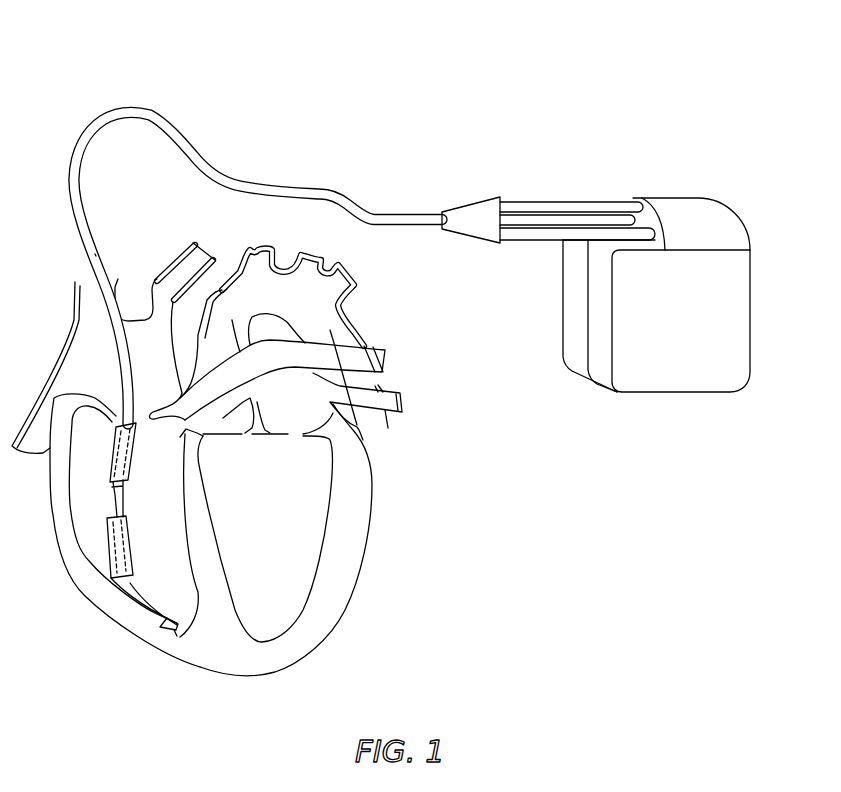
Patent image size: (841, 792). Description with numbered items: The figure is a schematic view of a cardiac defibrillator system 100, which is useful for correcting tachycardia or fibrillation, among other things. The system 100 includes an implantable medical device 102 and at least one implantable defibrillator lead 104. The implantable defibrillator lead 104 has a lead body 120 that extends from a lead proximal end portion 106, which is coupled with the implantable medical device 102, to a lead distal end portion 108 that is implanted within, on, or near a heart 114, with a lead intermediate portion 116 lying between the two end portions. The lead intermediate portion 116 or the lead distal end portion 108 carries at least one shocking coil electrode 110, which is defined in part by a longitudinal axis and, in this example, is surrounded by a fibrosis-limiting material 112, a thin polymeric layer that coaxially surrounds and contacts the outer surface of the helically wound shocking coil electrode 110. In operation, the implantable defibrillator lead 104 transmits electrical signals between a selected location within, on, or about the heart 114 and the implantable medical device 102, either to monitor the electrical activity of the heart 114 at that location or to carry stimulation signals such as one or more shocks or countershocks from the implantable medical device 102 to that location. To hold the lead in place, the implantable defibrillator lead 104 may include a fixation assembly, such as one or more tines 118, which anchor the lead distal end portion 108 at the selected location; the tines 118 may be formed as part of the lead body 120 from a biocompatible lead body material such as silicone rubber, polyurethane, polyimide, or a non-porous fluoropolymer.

The cardiac defibrillator system 100 is at (698, 66).
The implantable medical device 102 is at (750, 308).
The implantable defibrillator lead 104 is at (89, 117).
The lead proximal end portion 106 is at (570, 200).
The lead distal end portion 108 is at (140, 603).
The shocking coil electrode 110 is at (117, 468).
The fibrosis-limiting material 112 is at (110, 457).
The heart 114 is at (367, 573).
The lead intermediate portion 116 is at (97, 254).
The tines 118 is at (163, 630).
The lead body 120 is at (267, 183).